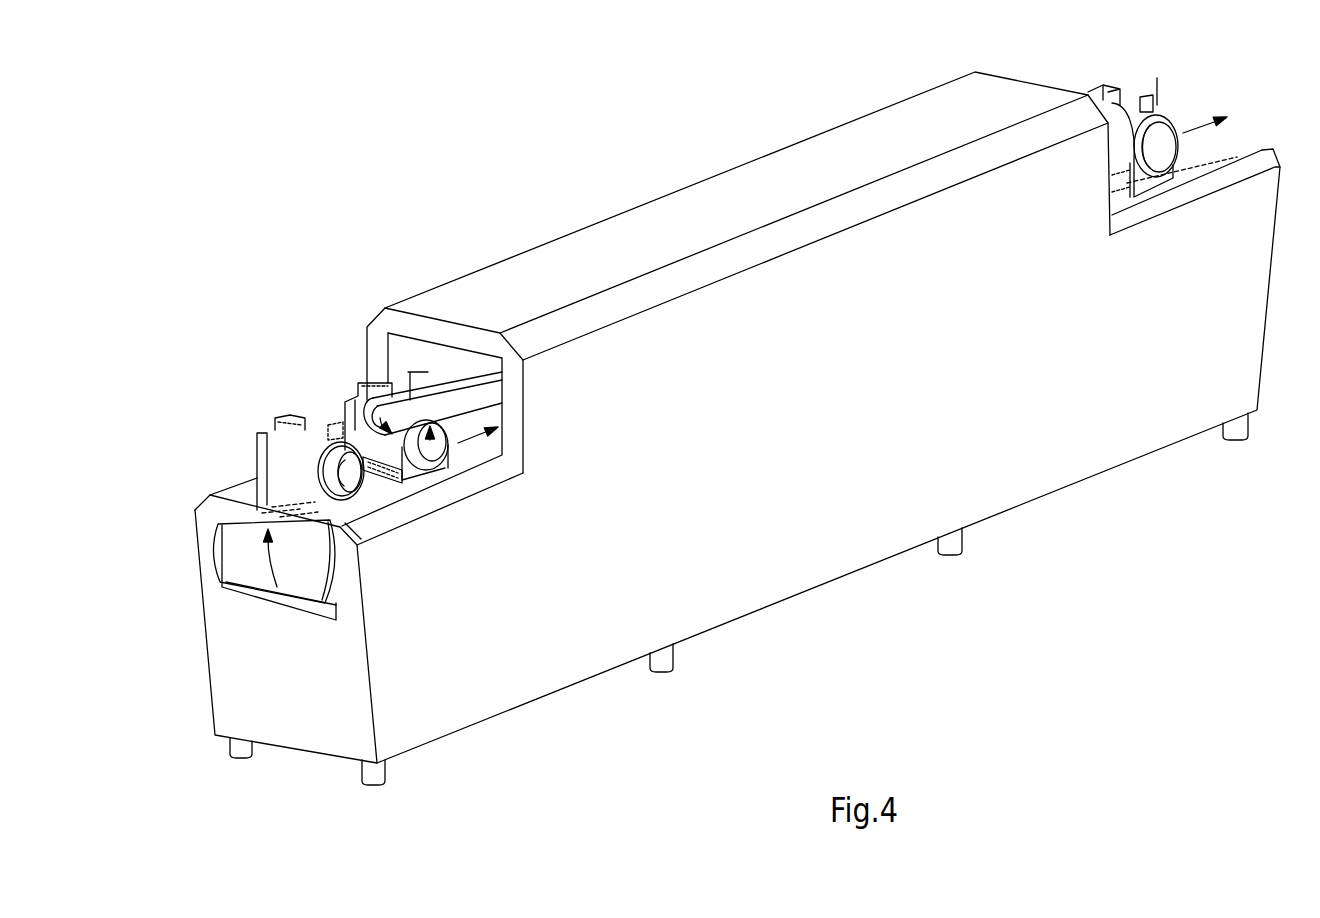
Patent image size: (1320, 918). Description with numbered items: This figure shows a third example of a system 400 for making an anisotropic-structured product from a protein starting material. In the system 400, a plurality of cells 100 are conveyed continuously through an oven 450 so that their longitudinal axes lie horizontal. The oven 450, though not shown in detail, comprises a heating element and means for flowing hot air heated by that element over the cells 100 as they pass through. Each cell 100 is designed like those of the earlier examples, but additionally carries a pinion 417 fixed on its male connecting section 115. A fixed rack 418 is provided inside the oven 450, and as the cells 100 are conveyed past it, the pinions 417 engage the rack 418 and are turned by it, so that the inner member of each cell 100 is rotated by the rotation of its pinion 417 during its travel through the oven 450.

The system 400 is at (157, 210).
The oven 450 is at (527, 290).
The cell 100 is at (318, 430).
The male connecting section 115 is at (316, 464).
The pinion 417 is at (354, 492).
The fixed rack 418 is at (485, 388).